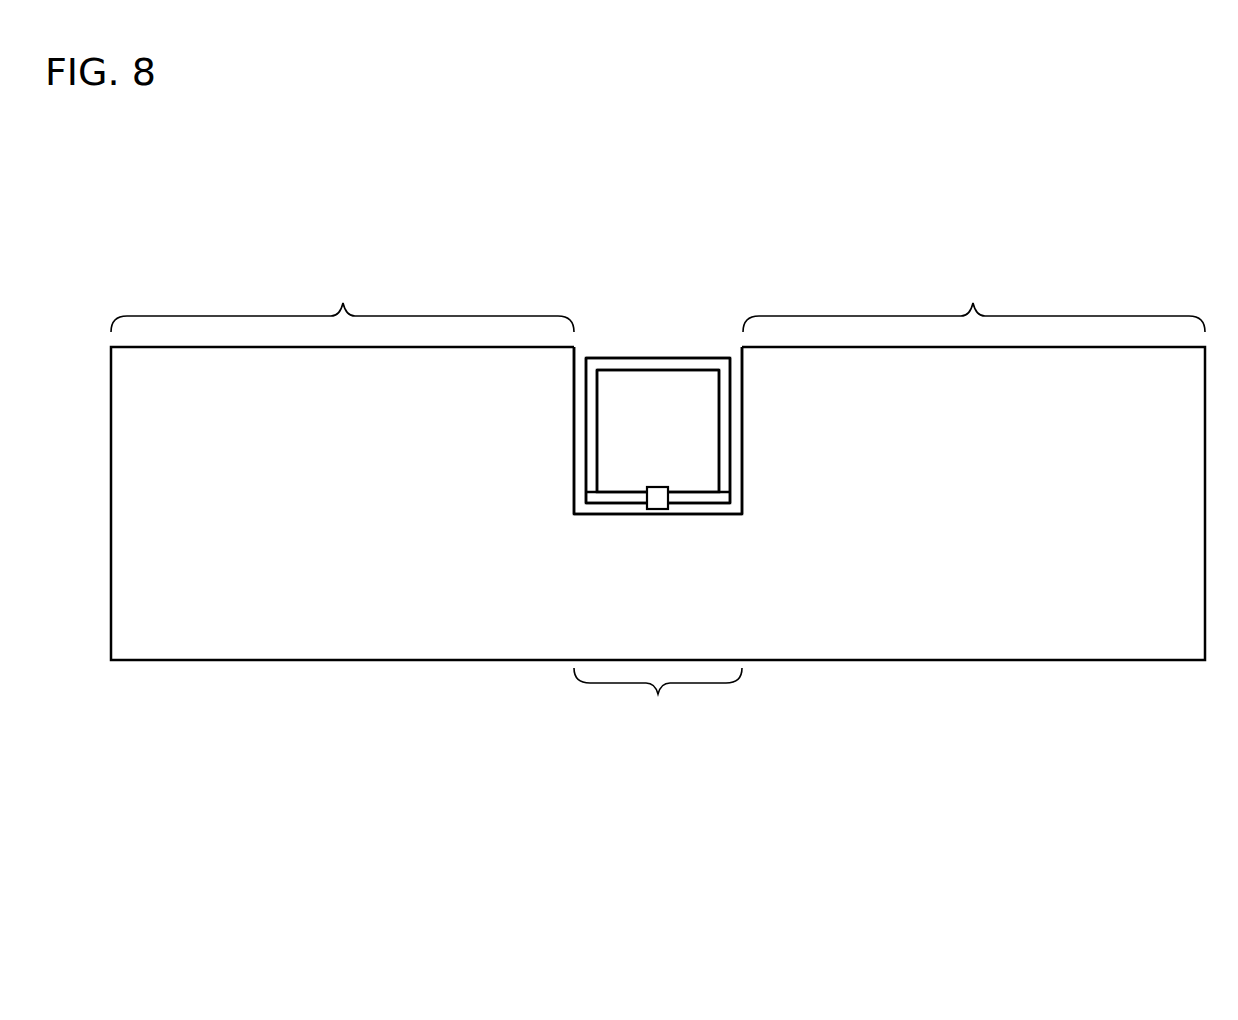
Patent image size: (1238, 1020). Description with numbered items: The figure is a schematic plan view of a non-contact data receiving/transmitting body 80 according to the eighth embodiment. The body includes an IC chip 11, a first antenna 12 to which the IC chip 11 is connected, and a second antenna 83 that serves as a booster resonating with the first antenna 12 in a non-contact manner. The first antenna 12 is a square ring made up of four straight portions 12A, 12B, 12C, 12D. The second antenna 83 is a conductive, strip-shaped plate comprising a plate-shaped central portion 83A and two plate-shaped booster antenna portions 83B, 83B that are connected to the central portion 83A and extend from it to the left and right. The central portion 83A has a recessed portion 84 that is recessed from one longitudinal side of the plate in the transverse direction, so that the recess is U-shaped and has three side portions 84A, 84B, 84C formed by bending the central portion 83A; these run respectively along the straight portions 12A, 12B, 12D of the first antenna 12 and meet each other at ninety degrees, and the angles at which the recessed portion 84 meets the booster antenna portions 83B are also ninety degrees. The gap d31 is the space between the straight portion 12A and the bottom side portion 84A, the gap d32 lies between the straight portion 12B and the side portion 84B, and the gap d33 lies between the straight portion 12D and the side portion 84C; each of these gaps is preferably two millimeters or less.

The non-contact data receiving/transmitting body 80 is at (1074, 218).
The second antenna 83 is at (1022, 633).
The central portion 83A is at (658, 698).
The booster antenna portions 83B is at (658, 301).
The recessed portion 84 is at (574, 355).
The side portion 84A is at (622, 514).
The side portion 84B is at (574, 460).
The side portion 84C is at (743, 483).
The first antenna 12 is at (698, 358).
The straight portion 12A is at (612, 497).
The straight portion 12B is at (591, 440).
The straight portion 12C is at (659, 364).
The straight portion 12D is at (725, 463).
The IC chip 11 is at (657, 487).
The gap d31 is at (691, 463).
The gap d32 is at (535, 419).
The gap d33 is at (690, 440).